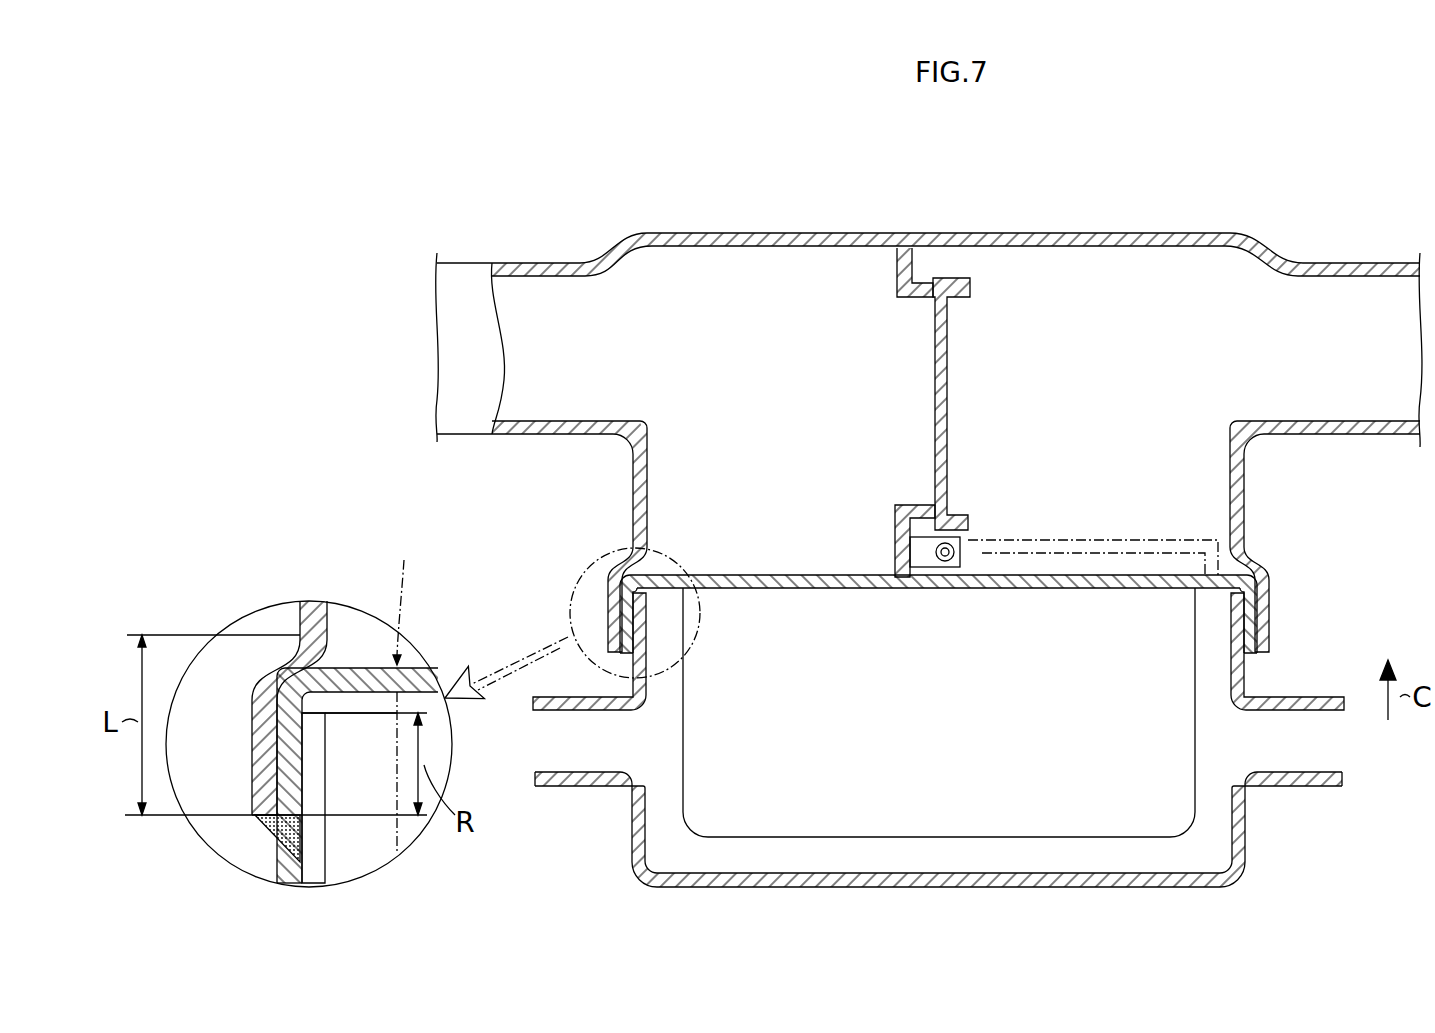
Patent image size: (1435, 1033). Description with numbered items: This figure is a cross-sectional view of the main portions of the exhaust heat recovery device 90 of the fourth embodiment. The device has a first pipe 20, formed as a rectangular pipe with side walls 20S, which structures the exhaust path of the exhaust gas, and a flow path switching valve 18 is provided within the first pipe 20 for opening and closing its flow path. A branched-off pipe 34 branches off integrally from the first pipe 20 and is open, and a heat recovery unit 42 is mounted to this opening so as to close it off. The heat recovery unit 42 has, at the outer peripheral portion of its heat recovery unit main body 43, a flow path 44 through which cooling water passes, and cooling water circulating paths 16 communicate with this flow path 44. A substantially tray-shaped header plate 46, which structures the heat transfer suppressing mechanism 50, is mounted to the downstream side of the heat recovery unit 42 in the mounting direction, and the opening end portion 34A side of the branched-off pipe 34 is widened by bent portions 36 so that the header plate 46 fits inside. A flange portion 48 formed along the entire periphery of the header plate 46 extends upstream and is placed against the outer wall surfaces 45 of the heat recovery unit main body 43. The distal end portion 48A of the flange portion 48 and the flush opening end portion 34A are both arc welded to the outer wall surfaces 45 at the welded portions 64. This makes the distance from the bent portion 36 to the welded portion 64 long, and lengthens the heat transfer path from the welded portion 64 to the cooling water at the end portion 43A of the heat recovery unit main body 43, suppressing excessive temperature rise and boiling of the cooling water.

The cooling water circulating path 16 is at (578, 787).
The flow path switching valve 18 is at (935, 393).
The first pipe 20 is at (920, 233).
The side wall 20S is at (437, 355).
The branched-off pipe 34 is at (632, 478).
The opening end portion 34A is at (258, 818).
The bent portion 36 is at (622, 553).
The heat recovery unit 42 is at (840, 889).
The heat recovery unit main body 43 is at (1030, 888).
The end portion 43A is at (327, 625).
The flow path 44 is at (712, 850).
The outer wall surface 45 is at (640, 667).
The header plate 46 is at (770, 575).
The flange portion 48 is at (634, 632).
The distal end portion 48A is at (310, 866).
The heat transfer suppressing mechanism 50 is at (604, 607).
The welded portion 64 is at (276, 836).
The exhaust heat recovery device 90 is at (1110, 198).